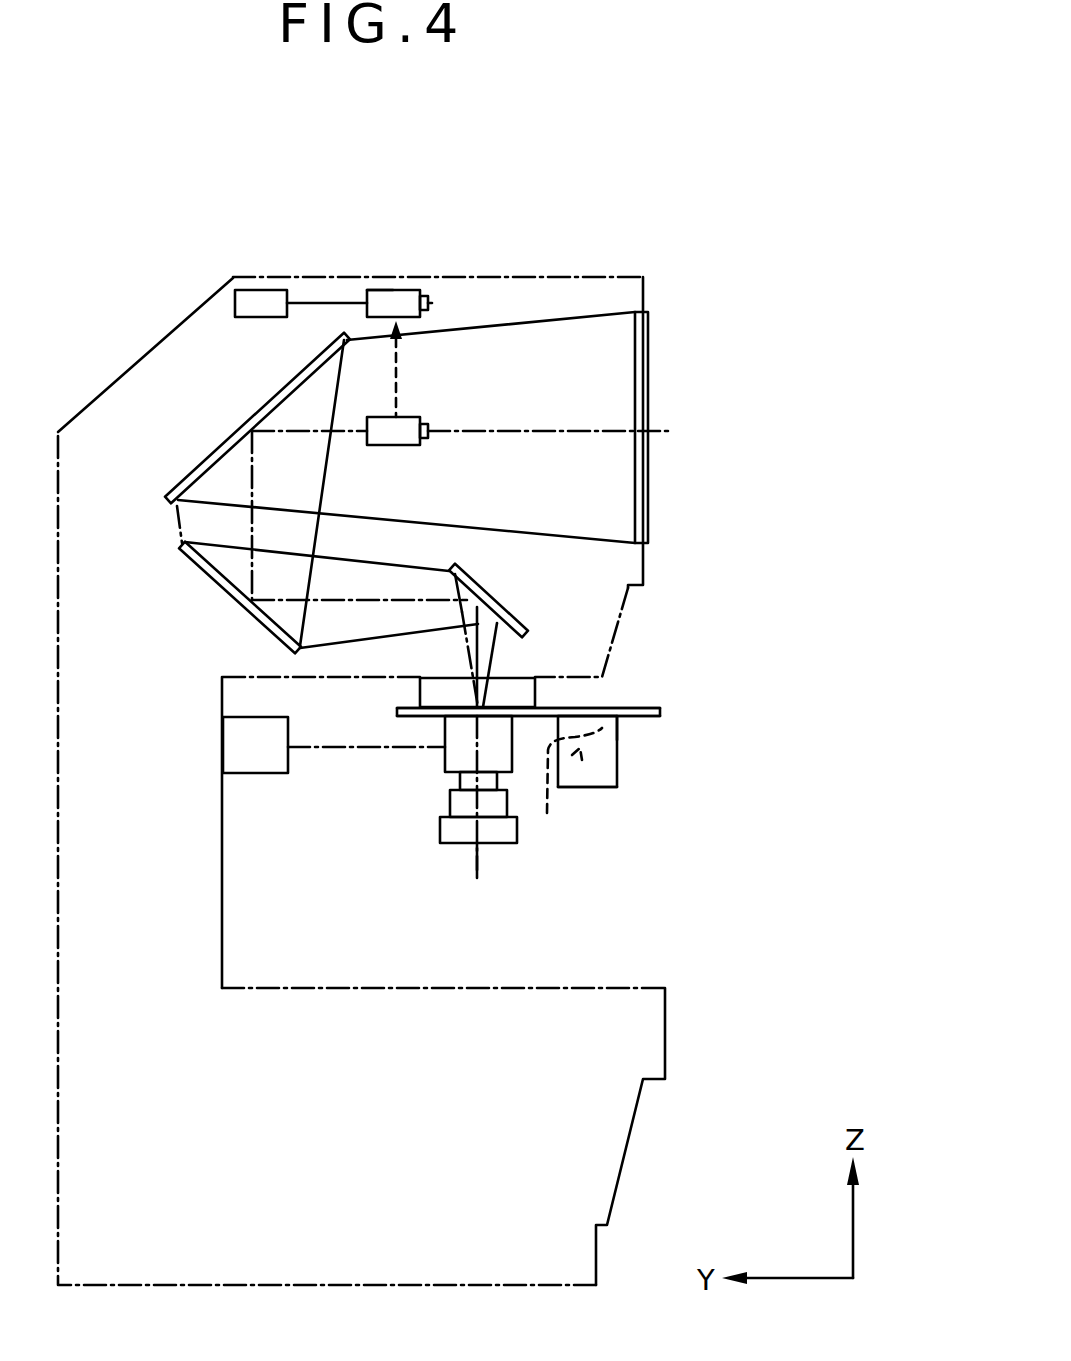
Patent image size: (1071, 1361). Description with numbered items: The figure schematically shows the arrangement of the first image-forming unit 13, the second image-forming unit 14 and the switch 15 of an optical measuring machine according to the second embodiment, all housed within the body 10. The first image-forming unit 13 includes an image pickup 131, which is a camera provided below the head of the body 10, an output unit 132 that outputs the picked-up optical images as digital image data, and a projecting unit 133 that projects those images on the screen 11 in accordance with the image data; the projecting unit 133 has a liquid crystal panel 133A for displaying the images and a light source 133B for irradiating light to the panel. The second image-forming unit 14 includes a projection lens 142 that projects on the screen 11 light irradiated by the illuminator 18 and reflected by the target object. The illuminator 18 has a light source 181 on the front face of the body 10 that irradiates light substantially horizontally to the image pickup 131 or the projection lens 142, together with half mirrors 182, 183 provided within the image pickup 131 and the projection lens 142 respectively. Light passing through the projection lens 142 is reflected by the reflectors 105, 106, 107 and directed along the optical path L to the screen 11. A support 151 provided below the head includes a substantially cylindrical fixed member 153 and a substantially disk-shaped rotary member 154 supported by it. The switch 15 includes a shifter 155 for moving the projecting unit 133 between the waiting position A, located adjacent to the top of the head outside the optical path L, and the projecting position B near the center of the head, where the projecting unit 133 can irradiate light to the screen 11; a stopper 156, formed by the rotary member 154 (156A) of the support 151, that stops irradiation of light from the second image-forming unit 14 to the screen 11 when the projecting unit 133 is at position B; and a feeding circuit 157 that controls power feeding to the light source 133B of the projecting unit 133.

The body 10 is at (96, 398).
The screen 11 is at (650, 380).
The first image-forming unit 13 is at (596, 812).
The second image-forming unit 14 is at (477, 882).
The switch 15 is at (668, 760).
The illuminator 18 is at (412, 801).
The reflector 105 is at (500, 600).
The reflector 106 is at (203, 570).
The reflector 107 is at (223, 435).
The image pickup 131 is at (617, 787).
The output unit 132 is at (617, 725).
The projecting unit 133 is at (410, 252).
The liquid crystal panel 133A is at (415, 284).
The light source 133B is at (372, 284).
The projection lens 142 is at (440, 827).
The support 151 is at (805, 653).
The fixed member 153 is at (535, 694).
The rotary member 154 is at (660, 712).
The shifter 155 is at (418, 372).
The stopper 156 is at (732, 791).
The rotary member 156A is at (607, 736).
The feeding circuit 157 is at (262, 290).
The light source 181 is at (255, 773).
The half mirror 182 is at (562, 790).
The half mirror 183 is at (457, 732).
The waiting position A is at (430, 303).
The projecting position B is at (430, 430).
The optical path L is at (588, 318).